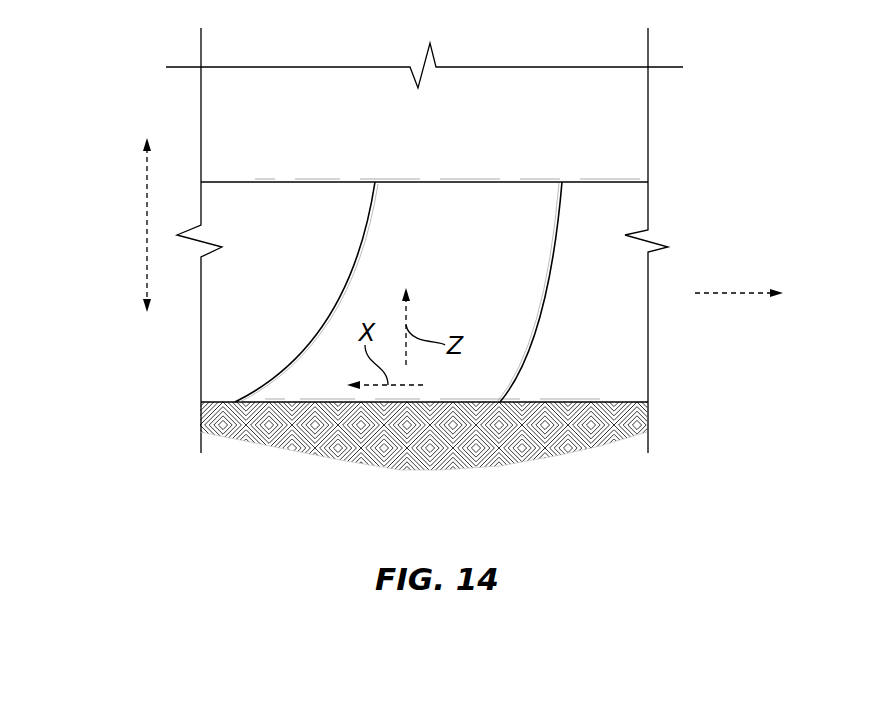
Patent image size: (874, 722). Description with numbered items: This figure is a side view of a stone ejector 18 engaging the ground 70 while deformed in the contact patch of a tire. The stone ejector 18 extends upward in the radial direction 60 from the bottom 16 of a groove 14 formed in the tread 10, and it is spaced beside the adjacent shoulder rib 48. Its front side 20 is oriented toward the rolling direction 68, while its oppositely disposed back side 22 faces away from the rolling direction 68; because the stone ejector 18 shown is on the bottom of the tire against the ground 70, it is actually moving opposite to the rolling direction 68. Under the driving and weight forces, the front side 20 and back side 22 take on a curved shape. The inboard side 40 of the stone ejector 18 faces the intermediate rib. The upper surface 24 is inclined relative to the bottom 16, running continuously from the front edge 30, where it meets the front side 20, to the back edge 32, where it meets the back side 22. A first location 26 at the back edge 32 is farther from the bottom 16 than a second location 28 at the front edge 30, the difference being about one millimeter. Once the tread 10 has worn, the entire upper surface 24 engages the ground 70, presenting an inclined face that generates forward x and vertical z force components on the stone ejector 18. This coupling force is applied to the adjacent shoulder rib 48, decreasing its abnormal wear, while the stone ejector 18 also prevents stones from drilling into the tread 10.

The tread 10 is at (630, 103).
The groove 14 is at (580, 280).
The bottom 16 is at (288, 193).
The stone ejector 18 is at (427, 250).
The front side 20 is at (552, 340).
The back side 22 is at (322, 312).
The upper surface 24 is at (347, 408).
The first location 26 is at (272, 402).
The second location 28 is at (452, 402).
The front edge 30 is at (500, 402).
The back edge 32 is at (233, 402).
The inboard side 40 is at (527, 213).
The shoulder rib 48 is at (630, 212).
The radial direction 60 is at (147, 227).
The rolling direction 68 is at (725, 293).
The ground 70 is at (623, 402).